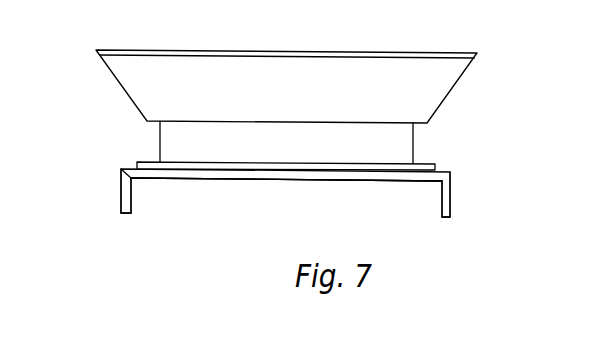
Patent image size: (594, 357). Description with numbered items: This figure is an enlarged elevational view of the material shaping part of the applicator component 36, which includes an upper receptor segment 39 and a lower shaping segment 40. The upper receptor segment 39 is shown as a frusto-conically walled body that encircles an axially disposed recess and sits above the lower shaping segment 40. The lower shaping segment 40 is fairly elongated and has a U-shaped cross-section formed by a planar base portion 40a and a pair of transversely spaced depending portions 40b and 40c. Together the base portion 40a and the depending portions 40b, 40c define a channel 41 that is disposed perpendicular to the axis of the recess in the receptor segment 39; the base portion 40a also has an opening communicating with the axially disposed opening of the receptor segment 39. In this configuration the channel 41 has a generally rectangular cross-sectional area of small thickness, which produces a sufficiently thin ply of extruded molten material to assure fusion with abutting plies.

The applicator component 36 is at (490, 79).
The upper receptor segment 39 is at (468, 125).
The lower shaping segment 40 is at (495, 179).
The base portion 40a is at (323, 181).
The depending portion 40b is at (120, 192).
The depending portion 40c is at (453, 198).
The channel 41 is at (212, 193).